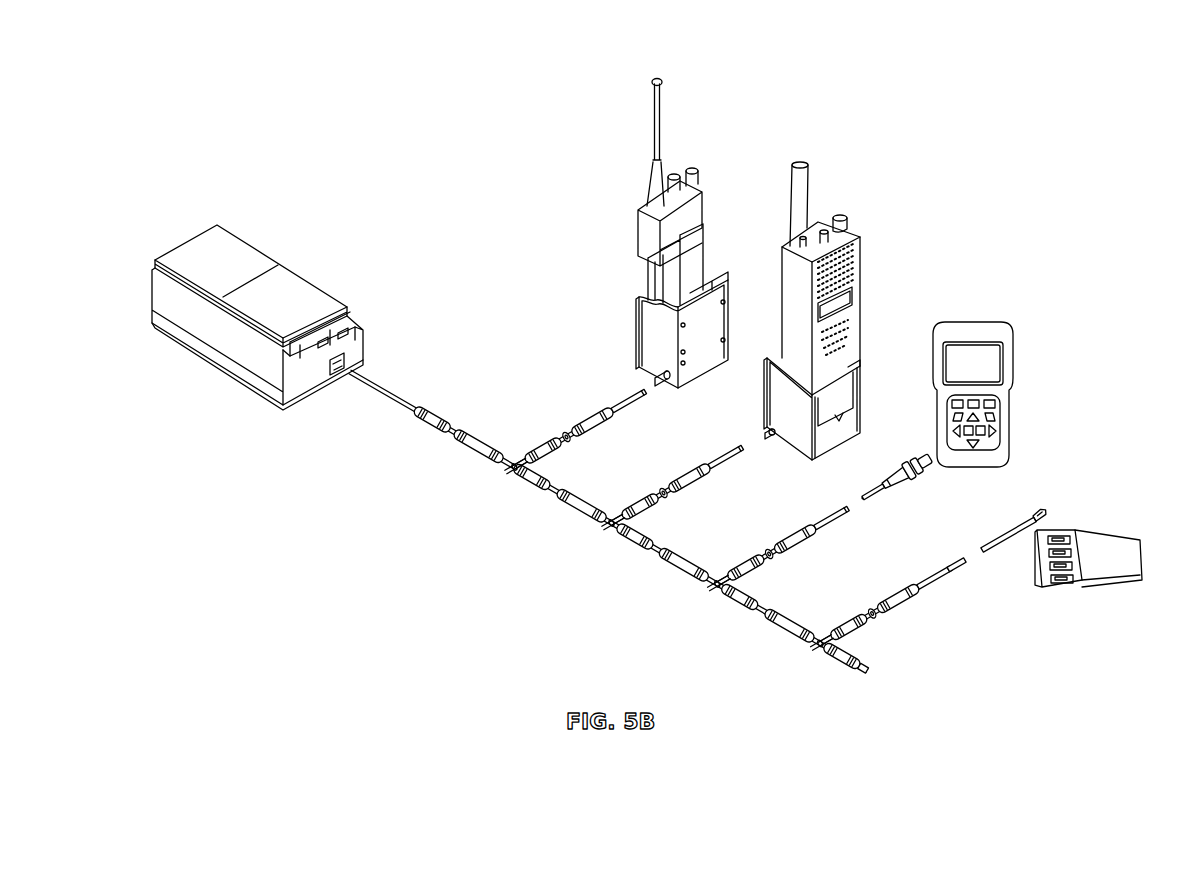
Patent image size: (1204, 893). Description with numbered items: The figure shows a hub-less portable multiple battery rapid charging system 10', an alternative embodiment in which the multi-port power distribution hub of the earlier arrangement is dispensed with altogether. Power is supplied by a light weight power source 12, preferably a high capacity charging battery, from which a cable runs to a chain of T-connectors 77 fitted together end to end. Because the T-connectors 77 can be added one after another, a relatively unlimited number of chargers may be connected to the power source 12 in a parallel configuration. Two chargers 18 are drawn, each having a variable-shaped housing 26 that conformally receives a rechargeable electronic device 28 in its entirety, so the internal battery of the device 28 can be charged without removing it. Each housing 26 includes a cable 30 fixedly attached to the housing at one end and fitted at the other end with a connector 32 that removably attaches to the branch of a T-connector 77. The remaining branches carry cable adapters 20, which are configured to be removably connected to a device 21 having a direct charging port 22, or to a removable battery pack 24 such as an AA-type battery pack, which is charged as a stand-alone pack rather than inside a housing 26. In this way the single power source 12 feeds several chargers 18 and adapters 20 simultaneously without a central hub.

The hub-less portable multiple battery rapid charging system 10' is at (227, 78).
The power source 12 is at (250, 252).
The charger 18 is at (645, 347).
The cable adapter 20 is at (880, 493).
The device 21 is at (1015, 356).
The direct charging port 22 is at (938, 423).
The removable battery pack 24 is at (1107, 530).
The housing 26 is at (638, 305).
The rechargeable electronic device 28 is at (698, 208).
The cable 30 is at (587, 428).
The connector 32 is at (636, 399).
The T-connector 77 is at (512, 470).